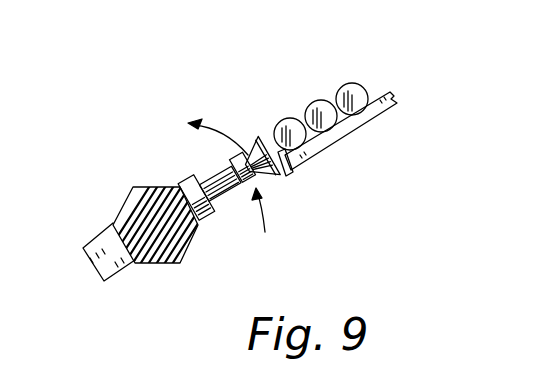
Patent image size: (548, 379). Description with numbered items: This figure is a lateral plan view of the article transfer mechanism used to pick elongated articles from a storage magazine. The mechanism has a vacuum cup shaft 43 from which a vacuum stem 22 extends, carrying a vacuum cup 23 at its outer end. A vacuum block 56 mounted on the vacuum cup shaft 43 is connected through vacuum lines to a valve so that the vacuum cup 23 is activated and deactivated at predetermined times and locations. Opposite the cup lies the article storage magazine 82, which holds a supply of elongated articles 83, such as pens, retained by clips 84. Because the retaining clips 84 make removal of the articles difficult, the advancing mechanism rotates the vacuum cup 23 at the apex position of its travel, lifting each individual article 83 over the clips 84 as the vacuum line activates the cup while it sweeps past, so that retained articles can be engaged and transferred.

The vacuum stem 22 is at (223, 190).
The vacuum cup 23 is at (250, 152).
The vacuum cup shaft 43 is at (166, 259).
The vacuum block 56 is at (105, 245).
The article storage magazine 82 is at (368, 157).
The elongated articles 83 is at (288, 120).
The clips 84 is at (289, 172).